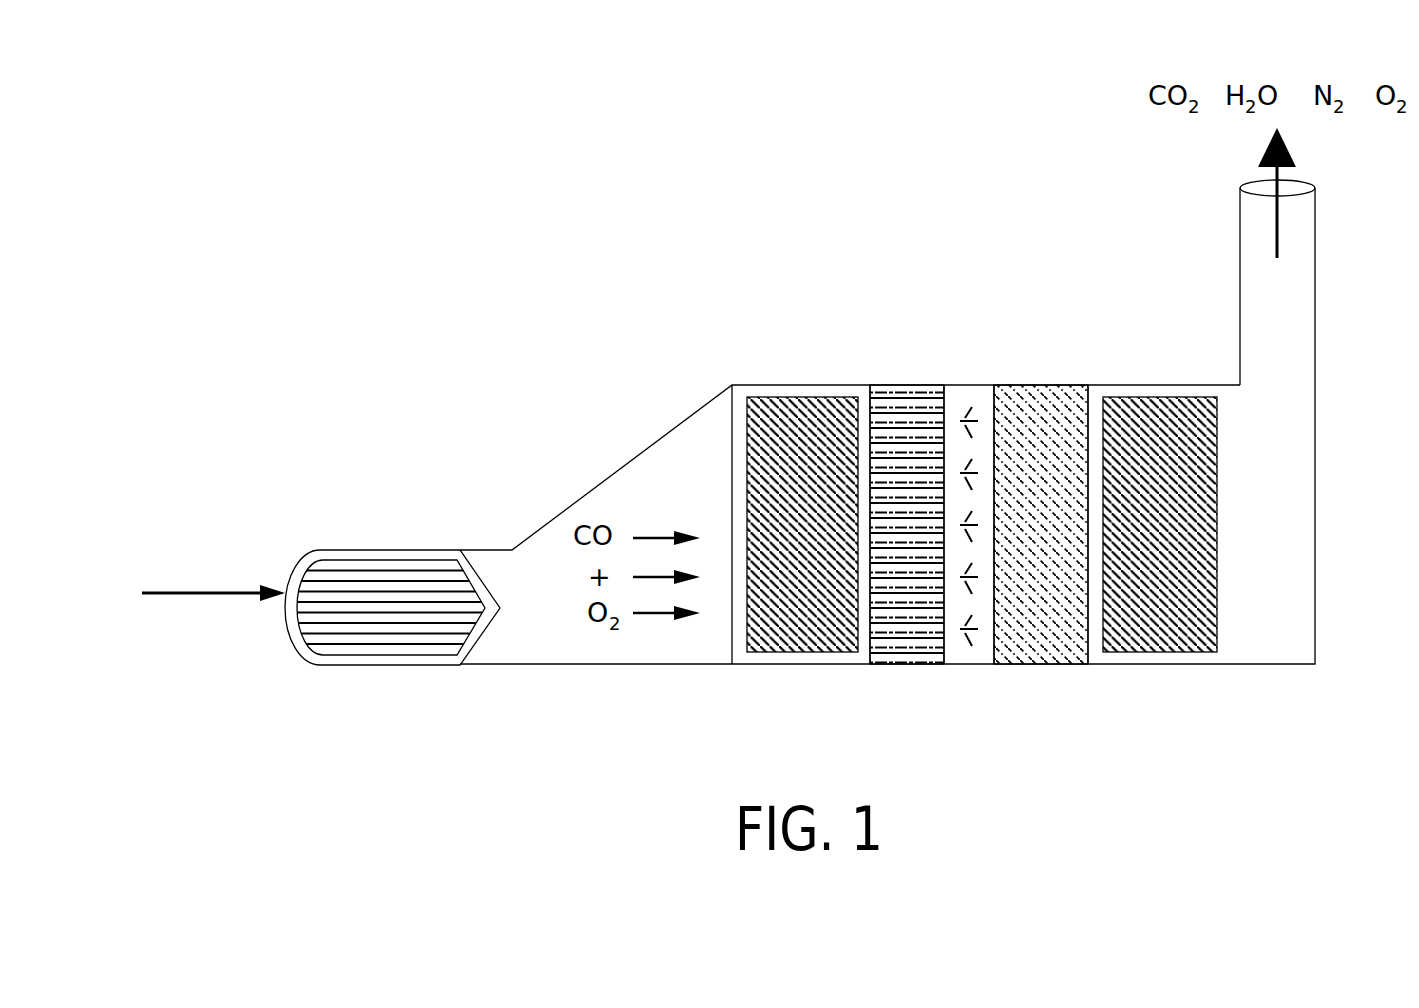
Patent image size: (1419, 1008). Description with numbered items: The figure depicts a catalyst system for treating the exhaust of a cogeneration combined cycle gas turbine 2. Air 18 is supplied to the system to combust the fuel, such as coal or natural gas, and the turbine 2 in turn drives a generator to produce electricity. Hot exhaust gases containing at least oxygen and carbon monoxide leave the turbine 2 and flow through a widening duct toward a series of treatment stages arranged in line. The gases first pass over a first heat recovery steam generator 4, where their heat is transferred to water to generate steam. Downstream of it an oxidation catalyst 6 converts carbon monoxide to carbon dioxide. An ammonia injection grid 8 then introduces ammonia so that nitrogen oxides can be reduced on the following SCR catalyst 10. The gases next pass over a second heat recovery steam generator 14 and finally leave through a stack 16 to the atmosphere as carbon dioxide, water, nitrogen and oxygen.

The cogeneration combined cycle gas turbine 2 is at (377, 548).
The first heat recovery steam generator 4 is at (810, 430).
The oxidation catalyst 6 is at (915, 632).
The ammonia injection grid 8 is at (983, 647).
The SCR catalyst 10 is at (1043, 425).
The second heat recovery steam generator 14 is at (1160, 425).
The stack 16 is at (1292, 302).
The air 18 is at (213, 576).